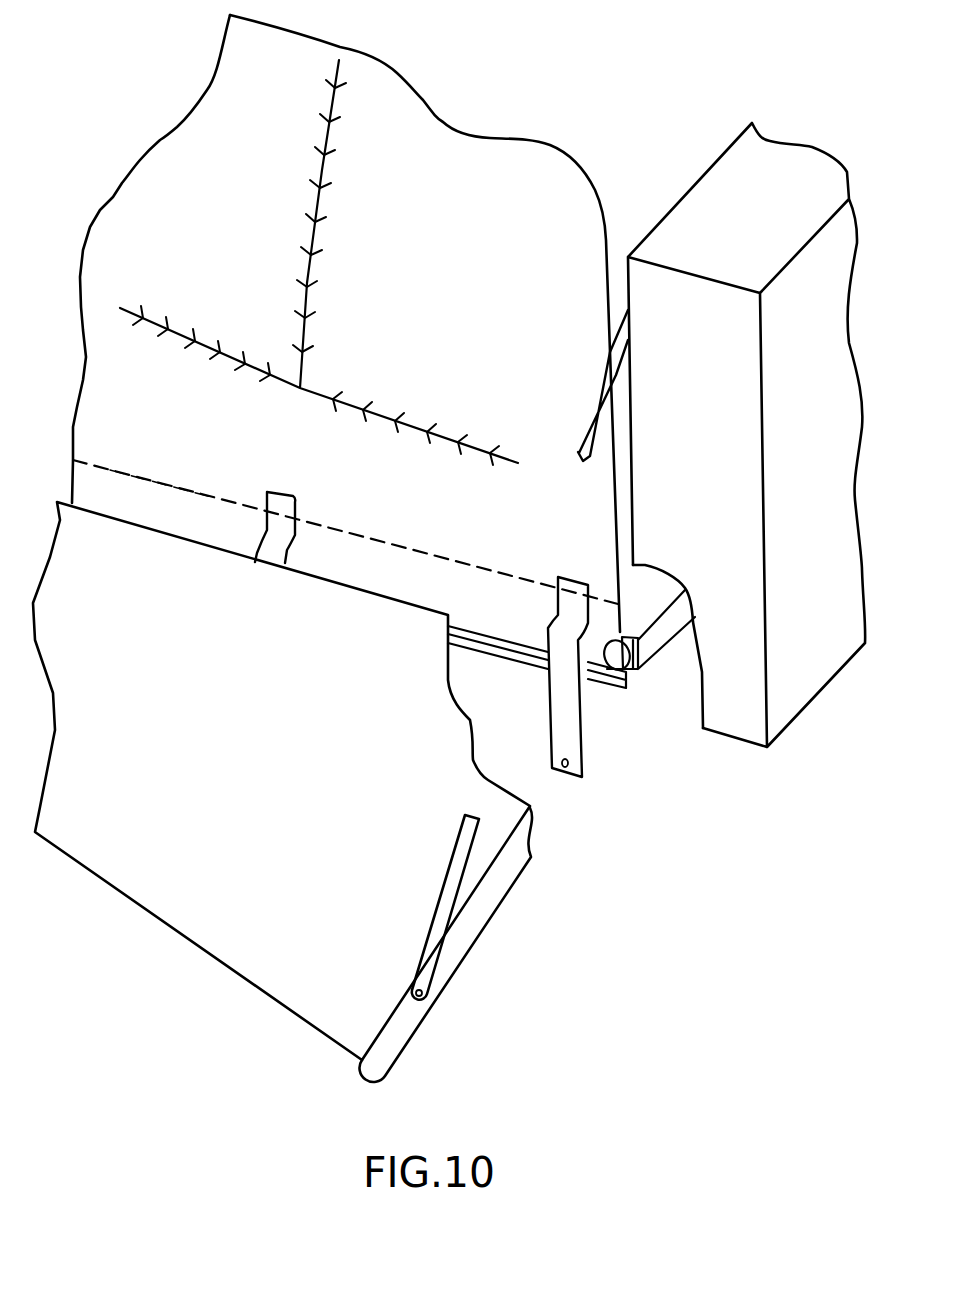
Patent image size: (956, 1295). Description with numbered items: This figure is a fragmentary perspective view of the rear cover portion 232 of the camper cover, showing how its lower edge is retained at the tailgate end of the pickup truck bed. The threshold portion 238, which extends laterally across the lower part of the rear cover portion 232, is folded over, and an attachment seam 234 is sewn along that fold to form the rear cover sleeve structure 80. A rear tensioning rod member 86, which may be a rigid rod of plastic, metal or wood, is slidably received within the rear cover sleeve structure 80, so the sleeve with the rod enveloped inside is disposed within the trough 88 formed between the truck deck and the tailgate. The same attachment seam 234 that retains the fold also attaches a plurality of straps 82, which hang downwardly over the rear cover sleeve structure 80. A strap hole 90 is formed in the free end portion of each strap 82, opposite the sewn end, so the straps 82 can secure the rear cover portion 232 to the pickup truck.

The rear cover portion 232 is at (487, 295).
The attachment seam 234 is at (207, 498).
The threshold portion 238 is at (468, 560).
The rear cover sleeve structure 80 is at (530, 640).
The straps 82 is at (273, 547).
The rear tensioning rod member 86 is at (617, 655).
The trough 88 is at (637, 637).
The strap hole 90 is at (567, 768).